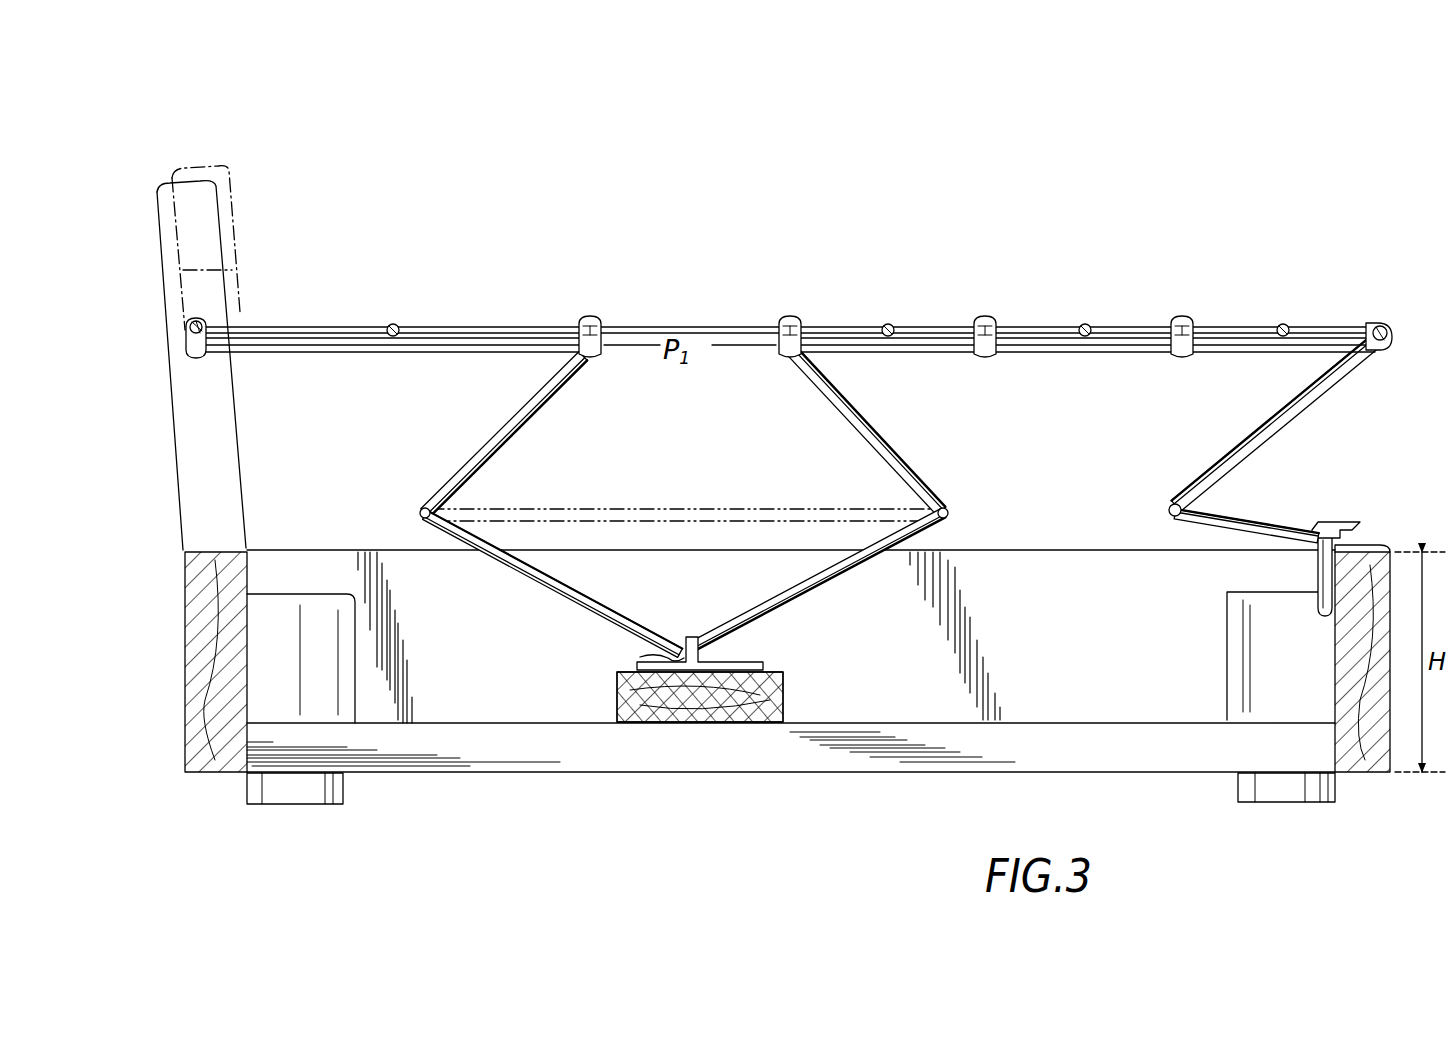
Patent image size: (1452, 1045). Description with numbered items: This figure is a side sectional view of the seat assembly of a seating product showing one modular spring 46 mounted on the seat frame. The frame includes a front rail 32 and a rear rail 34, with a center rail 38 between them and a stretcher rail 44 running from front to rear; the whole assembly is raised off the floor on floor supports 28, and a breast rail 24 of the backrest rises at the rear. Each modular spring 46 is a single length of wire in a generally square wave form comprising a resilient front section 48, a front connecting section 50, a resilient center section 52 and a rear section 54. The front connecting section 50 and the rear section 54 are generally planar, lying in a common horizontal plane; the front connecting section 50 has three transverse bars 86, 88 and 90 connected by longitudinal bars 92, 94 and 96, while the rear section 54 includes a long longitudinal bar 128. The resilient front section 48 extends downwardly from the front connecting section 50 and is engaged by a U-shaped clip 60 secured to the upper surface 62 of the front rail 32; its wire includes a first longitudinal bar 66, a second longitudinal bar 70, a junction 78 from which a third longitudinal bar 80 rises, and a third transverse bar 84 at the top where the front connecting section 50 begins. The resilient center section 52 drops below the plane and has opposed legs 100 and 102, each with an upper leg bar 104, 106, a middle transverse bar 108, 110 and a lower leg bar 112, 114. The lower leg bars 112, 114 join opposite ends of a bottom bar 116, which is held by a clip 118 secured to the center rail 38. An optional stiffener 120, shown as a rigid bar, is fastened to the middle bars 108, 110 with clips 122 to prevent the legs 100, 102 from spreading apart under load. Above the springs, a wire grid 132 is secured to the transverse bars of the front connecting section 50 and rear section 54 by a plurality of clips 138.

The breast rail 24 is at (238, 300).
The floor supports 28 is at (1295, 786).
The front rail 32 is at (1360, 760).
The rear rail 34 is at (207, 775).
The center rail 38 is at (785, 695).
The stretcher rail 44 is at (815, 760).
The modular spring 46 is at (492, 348).
The resilient front section 48 is at (1302, 440).
The front connecting section 50 is at (1088, 358).
The resilient center section 52 is at (835, 432).
The rear section 54 is at (380, 358).
The U-shaped clip 60 is at (1365, 535).
The upper surface 62 is at (1398, 548).
The first longitudinal bar 66 is at (1317, 574).
The second longitudinal bar 70 is at (1228, 525).
The junction 78 is at (1167, 510).
The third longitudinal bar 80 is at (1218, 470).
The third transverse bar 84 is at (1395, 355).
The transverse bar 86 is at (1178, 352).
The transverse bar 88 is at (980, 352).
The transverse bar 90 is at (788, 356).
The longitudinal bar 92 is at (1275, 352).
The longitudinal bar 94 is at (1133, 352).
The longitudinal bar 96 is at (895, 350).
The leg 100 is at (858, 497).
The leg 102 is at (521, 505).
The upper leg bar 104 is at (862, 414).
The upper leg bar 106 is at (535, 405).
The middle transverse bar 108 is at (952, 506).
The middle transverse bar 110 is at (420, 515).
The lower leg bar 112 is at (832, 580).
The lower leg bar 114 is at (535, 590).
The bottom bar 116 is at (648, 655).
The clip 118 is at (748, 660).
The stiffener 120 is at (628, 522).
The clips 122 is at (945, 518).
The longitudinal bar 128 is at (294, 354).
The wire grid 132 is at (700, 320).
The clips 138 is at (800, 316).